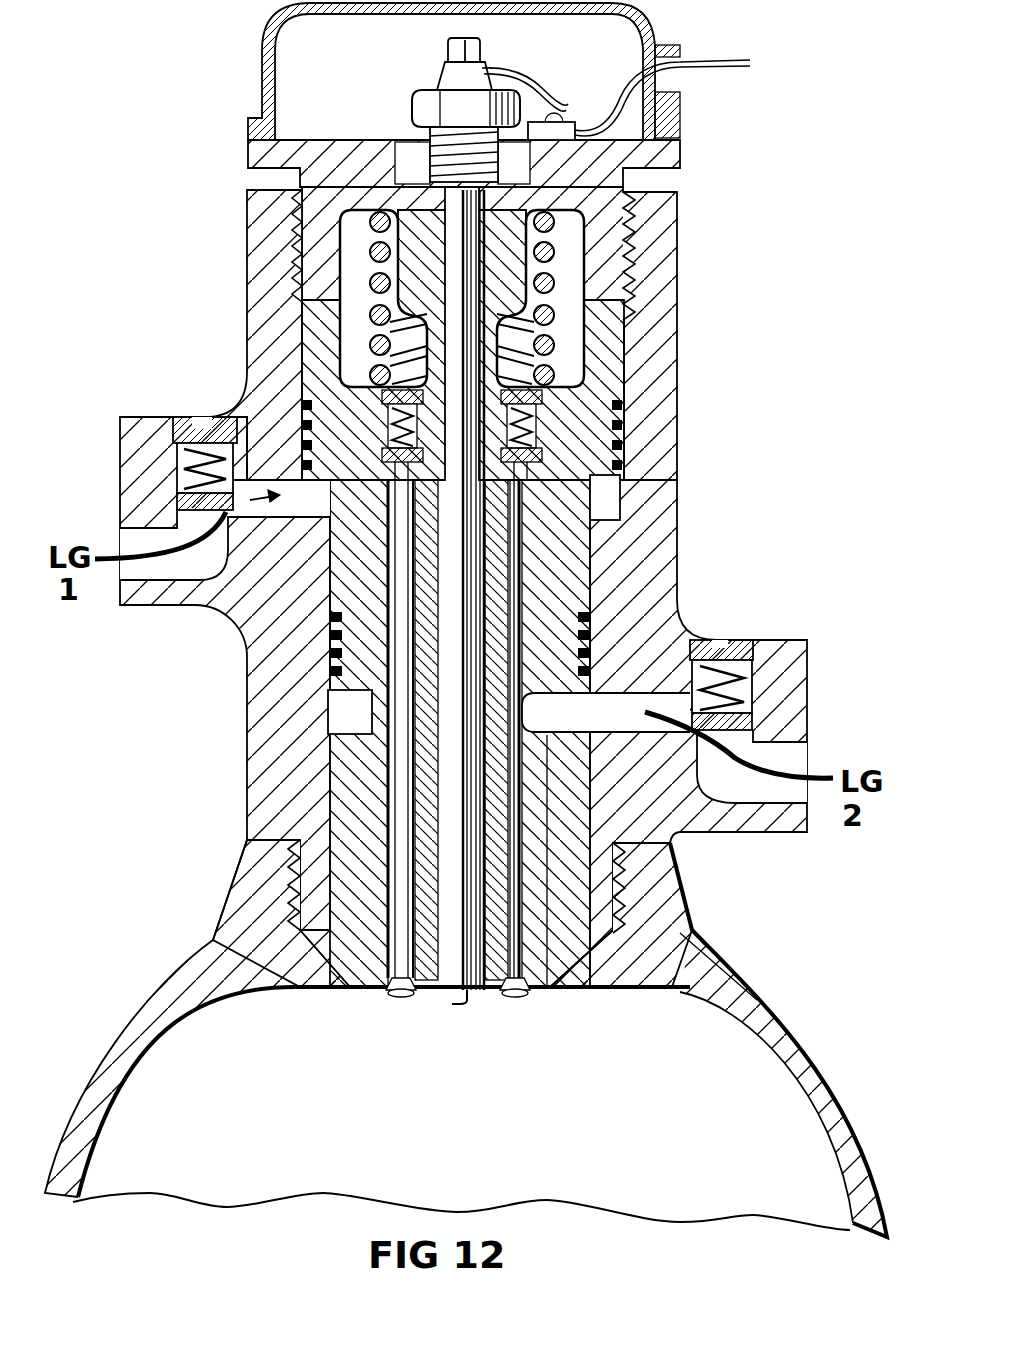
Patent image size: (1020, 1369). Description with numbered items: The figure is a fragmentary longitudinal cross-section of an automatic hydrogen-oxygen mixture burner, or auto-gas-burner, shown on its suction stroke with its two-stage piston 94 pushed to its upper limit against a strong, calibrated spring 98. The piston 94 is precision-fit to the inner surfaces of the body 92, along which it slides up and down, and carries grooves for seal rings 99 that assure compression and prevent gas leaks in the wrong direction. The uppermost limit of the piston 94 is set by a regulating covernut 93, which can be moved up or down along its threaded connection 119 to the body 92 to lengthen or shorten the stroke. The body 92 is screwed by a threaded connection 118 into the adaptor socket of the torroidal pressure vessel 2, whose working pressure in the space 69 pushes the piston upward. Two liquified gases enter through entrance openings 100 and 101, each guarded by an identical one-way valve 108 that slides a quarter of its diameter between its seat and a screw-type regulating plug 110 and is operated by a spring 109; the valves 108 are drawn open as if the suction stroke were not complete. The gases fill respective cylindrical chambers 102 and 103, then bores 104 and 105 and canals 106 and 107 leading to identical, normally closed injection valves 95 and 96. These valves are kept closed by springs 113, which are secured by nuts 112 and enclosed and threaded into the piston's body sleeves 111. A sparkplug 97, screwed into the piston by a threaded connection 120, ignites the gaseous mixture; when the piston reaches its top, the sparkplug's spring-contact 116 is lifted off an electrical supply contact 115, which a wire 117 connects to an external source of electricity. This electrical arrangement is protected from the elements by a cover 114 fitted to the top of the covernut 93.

The torroidal pressure vessel 2 is at (758, 984).
The space 69 is at (624, 1076).
The body 92 is at (665, 256).
The covernut 93 is at (666, 158).
The two-stage piston 94 is at (600, 364).
The injection valve 95 is at (494, 992).
The injection valve 96 is at (406, 992).
The sparkplug 97 is at (466, 1005).
The calibrated spring 98 is at (566, 334).
The seal rings 99 is at (622, 412).
The entrance opening 100 is at (132, 546).
The entrance opening 101 is at (805, 760).
The cylindrical chamber 102 is at (607, 497).
The cylindrical chamber 103 is at (350, 712).
The bore 104 is at (686, 726).
The bore 105 is at (324, 484).
The canal 106 is at (352, 990).
The canal 107 is at (556, 990).
The one-way valve 108 is at (182, 502).
The spring 109 is at (182, 462).
The regulating plug 110 is at (185, 420).
The body sleeve 111 is at (542, 400).
The nut 112 is at (542, 428).
The spring 113 is at (542, 455).
The cover 114 is at (668, 42).
The electrical supply contact 115 is at (576, 128).
The spring-contact 116 is at (528, 80).
The wire 117 is at (640, 66).
The threaded connection 118 is at (662, 860).
The threaded connection 119 is at (272, 190).
The threaded connection 120 is at (416, 126).